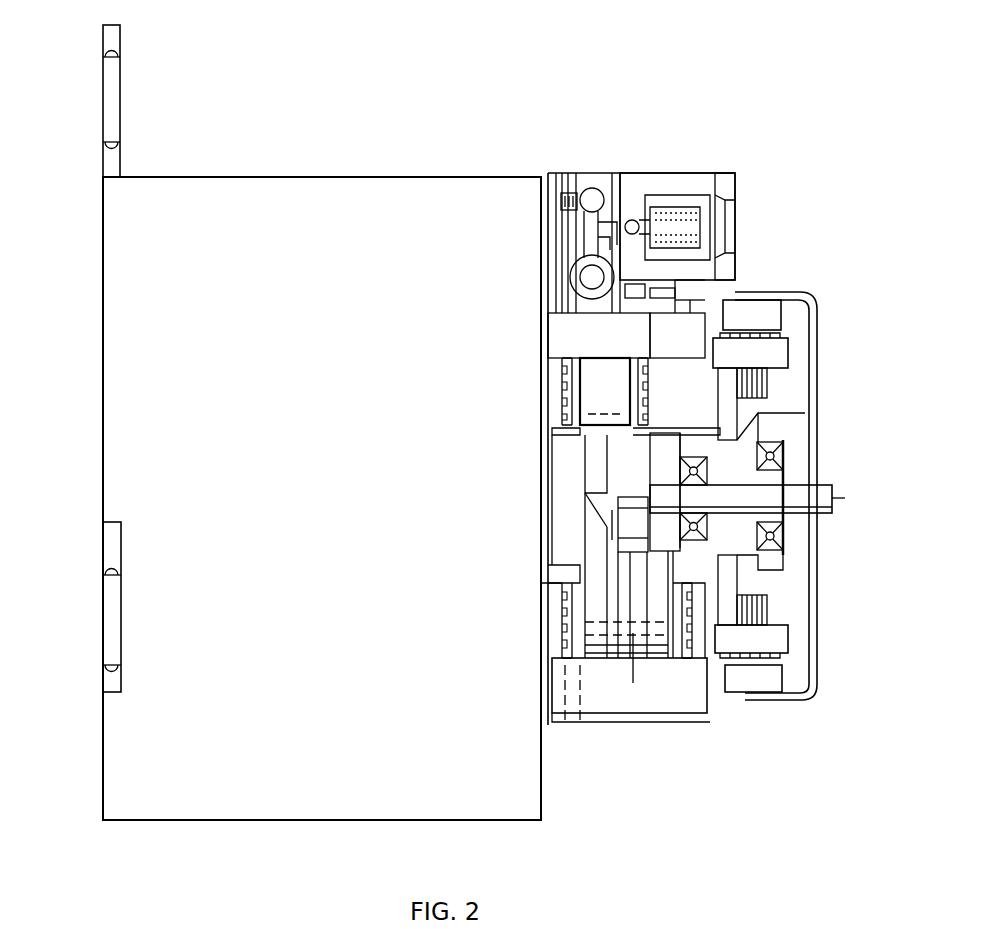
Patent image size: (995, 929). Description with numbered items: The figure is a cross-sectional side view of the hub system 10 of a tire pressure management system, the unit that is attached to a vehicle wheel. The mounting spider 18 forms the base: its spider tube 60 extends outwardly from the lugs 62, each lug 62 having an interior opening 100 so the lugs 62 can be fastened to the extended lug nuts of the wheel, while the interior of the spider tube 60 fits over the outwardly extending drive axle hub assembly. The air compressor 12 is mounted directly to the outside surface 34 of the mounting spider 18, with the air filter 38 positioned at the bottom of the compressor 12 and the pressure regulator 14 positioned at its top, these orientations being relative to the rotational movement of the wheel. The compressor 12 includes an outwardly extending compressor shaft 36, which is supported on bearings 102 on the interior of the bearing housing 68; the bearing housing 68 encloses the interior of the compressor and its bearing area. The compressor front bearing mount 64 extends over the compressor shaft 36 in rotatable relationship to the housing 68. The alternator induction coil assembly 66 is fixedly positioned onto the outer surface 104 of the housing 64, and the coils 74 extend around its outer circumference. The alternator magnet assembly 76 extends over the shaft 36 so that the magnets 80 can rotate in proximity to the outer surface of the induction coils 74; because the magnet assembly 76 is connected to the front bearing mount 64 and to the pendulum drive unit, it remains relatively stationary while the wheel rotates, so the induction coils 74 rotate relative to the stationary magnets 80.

The hub system 10 is at (758, 76).
The air compressor 12 is at (562, 403).
The pressure regulator 14 is at (633, 176).
The mounting spider 18 is at (348, 197).
The outside surface 34 is at (577, 496).
The compressor shaft 36 is at (832, 485).
The air filter 38 is at (677, 699).
The spider tube 60 is at (322, 824).
The lugs 62 is at (155, 358).
The compressor front bearing mount 64 is at (810, 476).
The alternator induction coil assembly 66 is at (798, 604).
The bearing housing 68 is at (702, 583).
The coils 74 is at (788, 352).
The alternator magnet assembly 76 is at (806, 293).
The magnets 80 is at (781, 313).
The interior opening 100 is at (110, 82).
The bearings 102 is at (688, 457).
The outer surface 104 is at (805, 410).